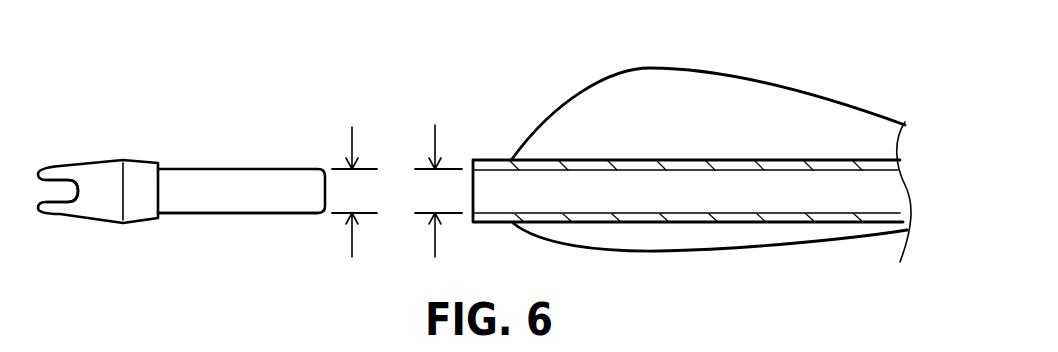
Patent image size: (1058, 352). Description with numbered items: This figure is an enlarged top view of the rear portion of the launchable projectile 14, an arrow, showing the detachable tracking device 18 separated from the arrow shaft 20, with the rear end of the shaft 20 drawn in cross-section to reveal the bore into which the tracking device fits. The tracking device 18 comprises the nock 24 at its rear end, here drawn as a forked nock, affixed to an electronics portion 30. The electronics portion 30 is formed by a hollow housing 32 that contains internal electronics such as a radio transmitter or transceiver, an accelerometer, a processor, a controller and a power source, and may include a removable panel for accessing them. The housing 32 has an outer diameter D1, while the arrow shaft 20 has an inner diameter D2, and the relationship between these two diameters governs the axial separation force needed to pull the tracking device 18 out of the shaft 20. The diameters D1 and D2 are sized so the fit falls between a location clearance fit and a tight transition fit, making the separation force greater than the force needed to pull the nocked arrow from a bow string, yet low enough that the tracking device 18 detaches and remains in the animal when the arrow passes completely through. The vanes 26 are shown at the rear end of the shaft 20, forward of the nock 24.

The launchable projectile 14 is at (692, 136).
The tracking device 18 is at (152, 158).
The shaft 20 is at (500, 158).
The nock 24 is at (89, 176).
The vanes 26 is at (653, 97).
The electronics portion 30 is at (219, 169).
The housing 32 is at (233, 193).
The outer diameter D1 is at (354, 173).
The inner diameter D2 is at (438, 174).